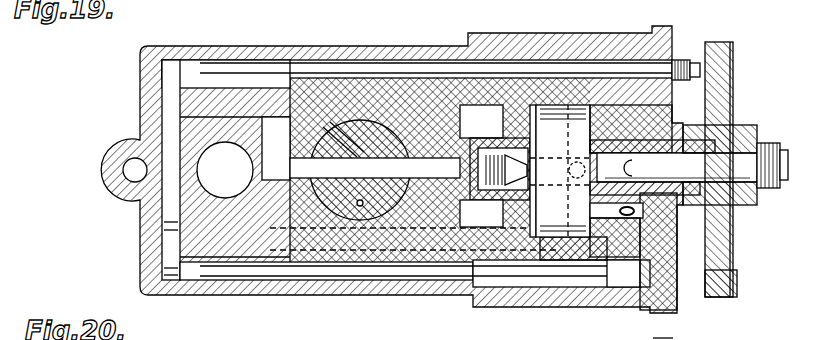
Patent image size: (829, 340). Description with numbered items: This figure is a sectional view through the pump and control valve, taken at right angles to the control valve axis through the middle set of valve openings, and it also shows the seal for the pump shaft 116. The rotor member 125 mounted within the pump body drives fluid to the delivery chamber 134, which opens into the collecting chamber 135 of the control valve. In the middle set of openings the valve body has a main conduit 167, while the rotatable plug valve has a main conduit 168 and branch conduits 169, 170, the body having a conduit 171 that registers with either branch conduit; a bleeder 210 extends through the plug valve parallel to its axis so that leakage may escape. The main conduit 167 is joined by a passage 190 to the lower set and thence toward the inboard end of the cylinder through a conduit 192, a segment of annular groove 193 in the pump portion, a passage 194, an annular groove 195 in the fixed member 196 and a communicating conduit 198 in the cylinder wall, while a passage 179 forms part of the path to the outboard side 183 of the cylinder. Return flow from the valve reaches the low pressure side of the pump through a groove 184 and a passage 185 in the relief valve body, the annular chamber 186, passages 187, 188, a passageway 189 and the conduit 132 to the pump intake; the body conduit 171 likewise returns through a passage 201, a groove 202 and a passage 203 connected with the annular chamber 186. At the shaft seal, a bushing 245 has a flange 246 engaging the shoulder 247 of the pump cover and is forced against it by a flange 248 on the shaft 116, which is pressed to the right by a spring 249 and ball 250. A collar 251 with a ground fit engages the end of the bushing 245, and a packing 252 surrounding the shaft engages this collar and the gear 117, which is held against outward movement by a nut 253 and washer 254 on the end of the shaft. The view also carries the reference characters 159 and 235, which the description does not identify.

In FIG. 19, the shaft 116 is at (738, 210).
In FIG. 19, the gear 117 is at (722, 42).
In FIG. 19, the member 125 is at (553, 113).
In FIG. 20, the member 125 is at (578, 329).
In FIG. 19, the conduit 132 is at (630, 287).
In FIG. 19, the delivery chamber 134 is at (517, 127).
In FIG. 20, the delivery chamber 134 is at (491, 329).
In FIG. 19, the collecting chamber 135 is at (467, 107).
In FIG. 19, the main conduit 167 is at (481, 121).
In FIG. 19, the main conduit 168 is at (413, 208).
In FIG. 19, the branch conduit 169 is at (370, 160).
In FIG. 19, the branch conduit 170 is at (330, 200).
In FIG. 19, the conduit 171 is at (310, 120).
In FIG. 19, the passage 179 is at (495, 182).
In FIG. 19, the outboard side of the cylinder 183 is at (668, 232).
In FIG. 19, the groove 184 is at (275, 6).
In FIG. 19, the passage 185 is at (297, 6).
In FIG. 19, the annular chamber 186 is at (168, 202).
In FIG. 19, the passage 187 is at (222, 270).
In FIG. 19, the passage 188 is at (636, 168).
In FIG. 20, the passageway 189 is at (541, 329).
In FIG. 19, the passage 190 is at (285, 173).
In FIG. 19, the conduit 192 is at (340, 240).
In FIG. 19, the segment of annular groove 193 is at (556, 202).
In FIG. 19, the passage 194 is at (563, 171).
In FIG. 20, the annular groove 195 is at (351, 337).
In FIG. 19, the fixed member 196 is at (325, 6).
In FIG. 20, the communicating conduit 198 is at (405, 337).
In FIG. 20, the passage 159 is at (445, 337).
In FIG. 19, the passage 201 is at (225, 170).
In FIG. 19, the groove 202 is at (283, 90).
In FIG. 20, the groove 202 is at (315, 330).
In FIG. 19, the passage 203 is at (221, 76).
In FIG. 20, the passage 203 is at (245, 337).
In FIG. 19, the bleeder 210 is at (360, 200).
In FIG. 19, the rod 235 is at (585, 62).
In FIG. 19, the bushing 245 is at (691, 101).
In FIG. 19, the flange 246 is at (644, 122).
In FIG. 19, the shoulder 247 is at (642, 136).
In FIG. 19, the flange 248 is at (631, 128).
In FIG. 19, the spring 249 is at (560, 169).
In FIG. 19, the ball 250 is at (470, 168).
In FIG. 19, the collar 251 is at (735, 232).
In FIG. 19, the packing 252 is at (715, 125).
In FIG. 19, the nut 253 is at (770, 143).
In FIG. 19, the washer 254 is at (707, 137).